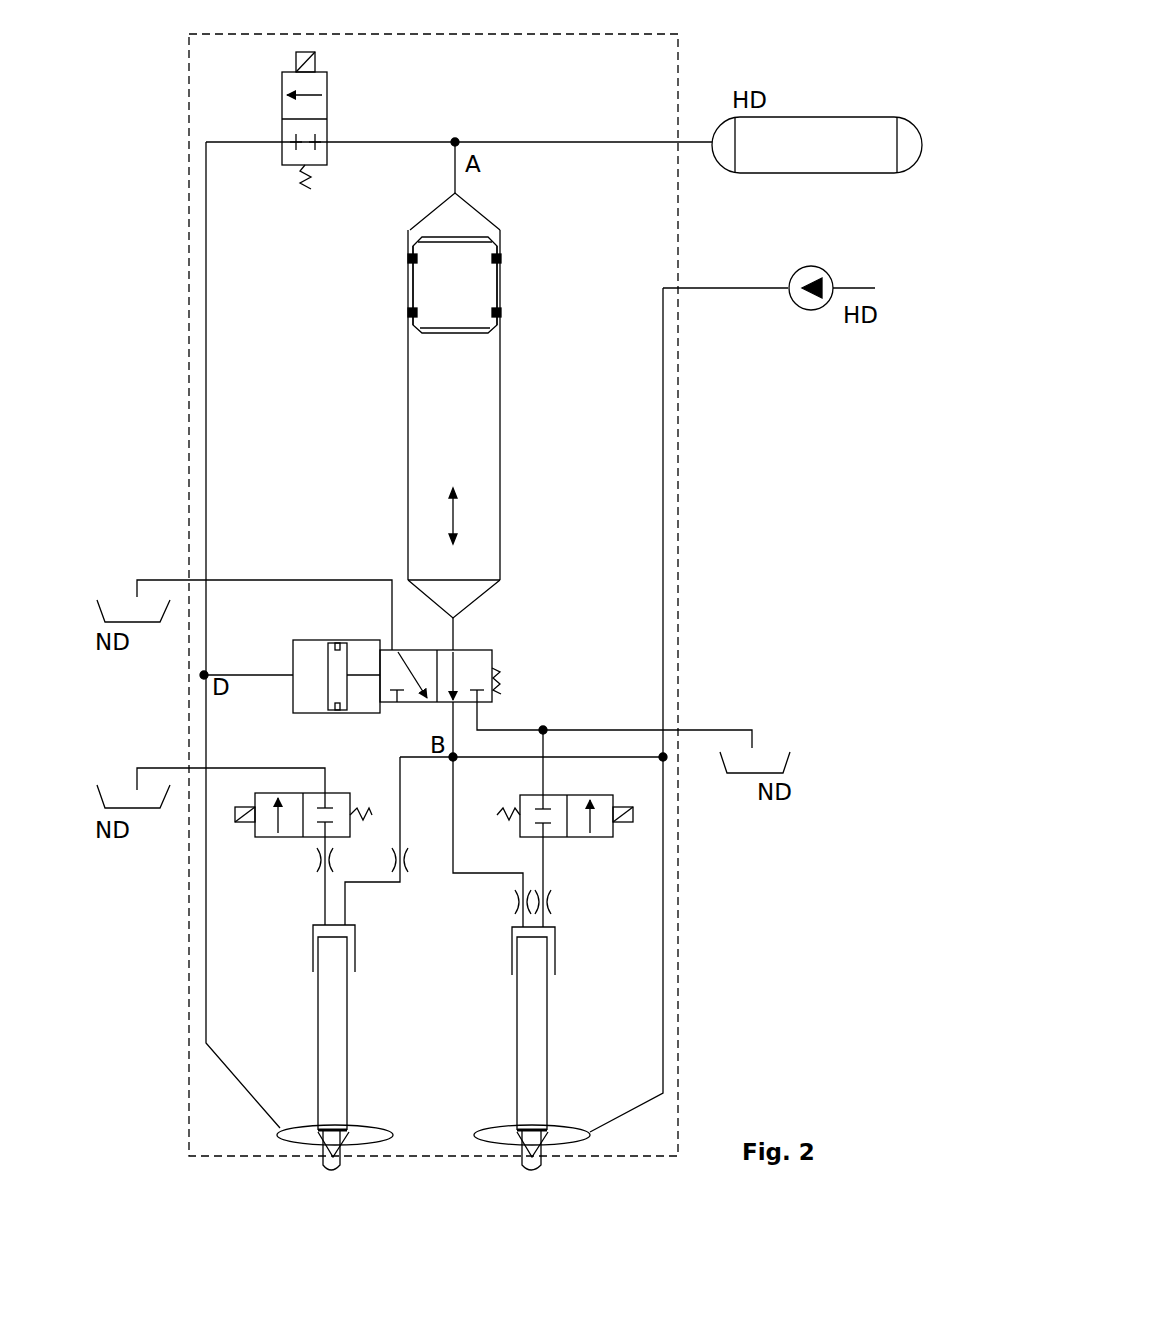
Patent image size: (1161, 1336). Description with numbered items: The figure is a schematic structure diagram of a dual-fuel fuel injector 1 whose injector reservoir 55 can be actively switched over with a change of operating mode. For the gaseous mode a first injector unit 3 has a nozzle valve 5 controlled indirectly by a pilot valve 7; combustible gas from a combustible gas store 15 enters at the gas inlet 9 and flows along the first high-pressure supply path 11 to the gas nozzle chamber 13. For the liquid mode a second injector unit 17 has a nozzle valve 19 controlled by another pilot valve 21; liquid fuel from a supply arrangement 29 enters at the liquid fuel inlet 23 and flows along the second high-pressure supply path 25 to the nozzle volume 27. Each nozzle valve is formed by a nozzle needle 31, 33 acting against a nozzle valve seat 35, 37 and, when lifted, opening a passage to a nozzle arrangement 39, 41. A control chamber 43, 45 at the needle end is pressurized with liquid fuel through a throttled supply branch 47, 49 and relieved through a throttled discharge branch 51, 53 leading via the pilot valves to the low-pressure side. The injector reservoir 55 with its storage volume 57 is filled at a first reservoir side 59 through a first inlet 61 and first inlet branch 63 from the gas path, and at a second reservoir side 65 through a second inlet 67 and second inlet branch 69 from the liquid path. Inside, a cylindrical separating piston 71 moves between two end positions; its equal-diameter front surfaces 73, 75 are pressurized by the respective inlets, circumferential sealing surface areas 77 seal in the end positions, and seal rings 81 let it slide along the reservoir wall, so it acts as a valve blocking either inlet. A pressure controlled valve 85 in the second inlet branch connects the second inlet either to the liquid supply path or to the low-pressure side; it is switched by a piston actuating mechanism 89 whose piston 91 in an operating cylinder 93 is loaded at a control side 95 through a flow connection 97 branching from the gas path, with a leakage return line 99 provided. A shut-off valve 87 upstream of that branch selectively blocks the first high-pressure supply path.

The dual-fuel fuel injector 1 is at (688, 497).
The first injector unit 3 is at (348, 1058).
The nozzle valve 5 is at (314, 1130).
The pilot valve 7 is at (275, 848).
The gas inlet 9 is at (680, 142).
The first high-pressure supply path 11 is at (243, 635).
The gas nozzle chamber 13 is at (370, 1130).
The combustible gas store 15 is at (817, 145).
The second injector unit 17 is at (521, 1065).
The nozzle valve 19 is at (548, 1140).
The pilot valve 21 is at (568, 845).
The liquid fuel inlet 23 is at (769, 262).
The second high-pressure supply path 25 is at (628, 710).
The nozzle volume 27 is at (497, 1130).
The supply arrangement 29 is at (793, 305).
The nozzle needle 31 is at (326, 1010).
The nozzle needle 33 is at (540, 1012).
The nozzle valve seat 35 is at (355, 1130).
The nozzle valve seat 37 is at (510, 1130).
The nozzle arrangement 39 is at (318, 1168).
The nozzle arrangement 41 is at (543, 1170).
The control chamber 43 is at (315, 932).
The control chamber 45 is at (515, 935).
The supply branch 47 is at (376, 841).
The supply branch 49 is at (488, 842).
The discharge branch 51 is at (231, 764).
The discharge branch 53 is at (633, 724).
The injector reservoir 55 is at (451, 396).
The storage volume 57 is at (454, 405).
The first reservoir side 59 is at (440, 222).
The first inlet 61 is at (466, 196).
The first inlet branch 63 is at (455, 186).
The second reservoir side 65 is at (462, 601).
The second inlet 67 is at (446, 625).
The second inlet branch 69 is at (468, 671).
The separating piston 71 is at (455, 306).
The front surface 73 is at (456, 236).
The front surface 75 is at (495, 344).
The sealing surface areas 77 is at (442, 317).
The seal rings 81 is at (502, 257).
The pressure controlled valve 85 is at (498, 694).
The shut-off valve 87 is at (336, 118).
The piston actuating mechanism 89 is at (309, 681).
The piston 91 is at (330, 668).
The operating cylinder 93 is at (307, 688).
The control side 95 is at (312, 705).
The flow connection 97 is at (246, 637).
The leakage return line 99 is at (264, 593).